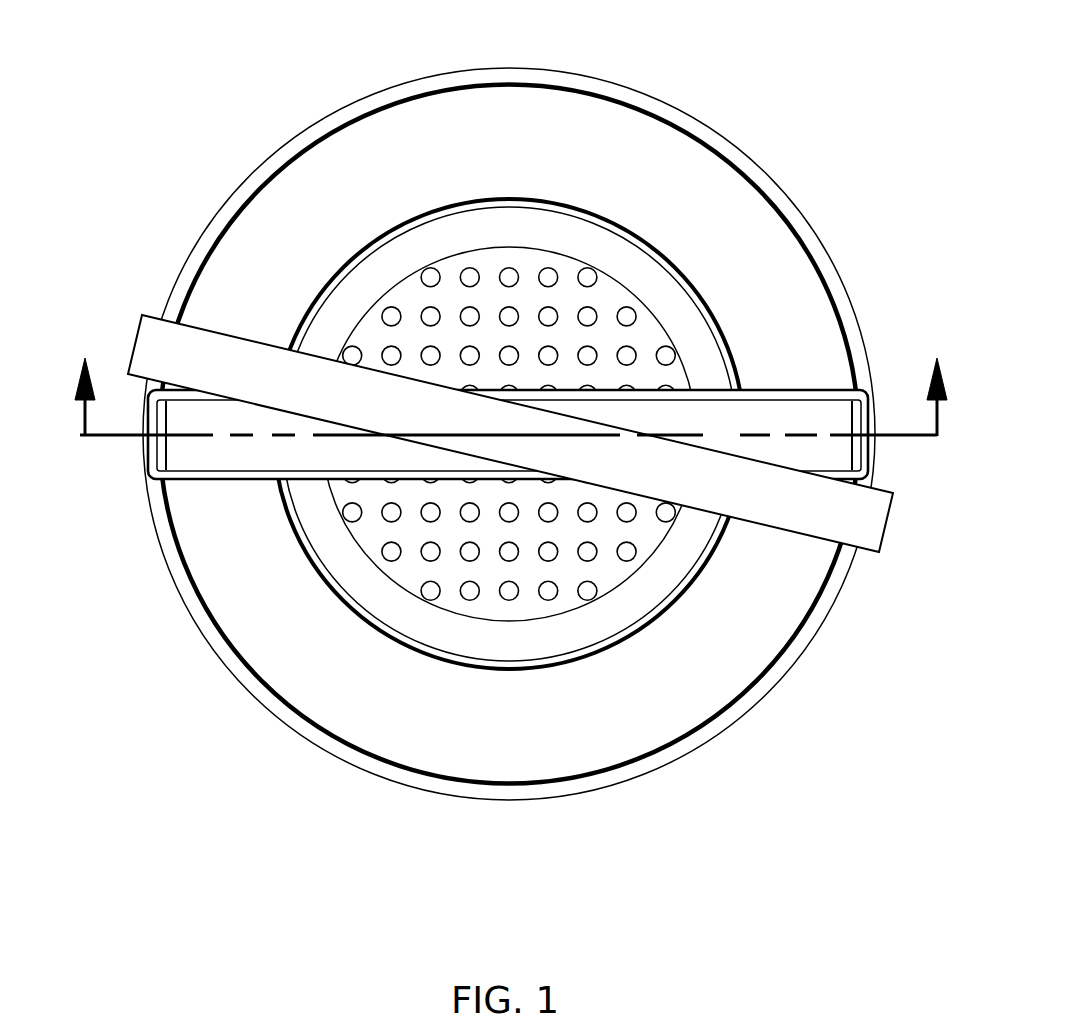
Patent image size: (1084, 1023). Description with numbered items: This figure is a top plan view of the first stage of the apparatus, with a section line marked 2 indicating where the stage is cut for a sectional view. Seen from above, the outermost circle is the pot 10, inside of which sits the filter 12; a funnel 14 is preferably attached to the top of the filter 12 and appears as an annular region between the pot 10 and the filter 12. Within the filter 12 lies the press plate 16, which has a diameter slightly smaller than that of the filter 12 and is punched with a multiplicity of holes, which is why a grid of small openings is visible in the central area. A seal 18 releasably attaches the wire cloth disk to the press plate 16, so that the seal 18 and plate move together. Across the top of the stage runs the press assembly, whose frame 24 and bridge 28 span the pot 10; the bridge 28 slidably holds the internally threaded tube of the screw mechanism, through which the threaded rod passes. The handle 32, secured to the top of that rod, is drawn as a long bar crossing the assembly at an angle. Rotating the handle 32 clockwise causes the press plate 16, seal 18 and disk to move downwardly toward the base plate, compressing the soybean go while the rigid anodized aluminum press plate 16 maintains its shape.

The pot 10 is at (237, 192).
The filter 12 is at (375, 240).
The funnel 14 is at (453, 140).
The press plate 16 is at (610, 337).
The seal 18 is at (595, 240).
The frame 24 is at (472, 503).
The bridge 28 is at (812, 385).
The handle 32 is at (863, 518).
The section line 2- 2 is at (510, 371).